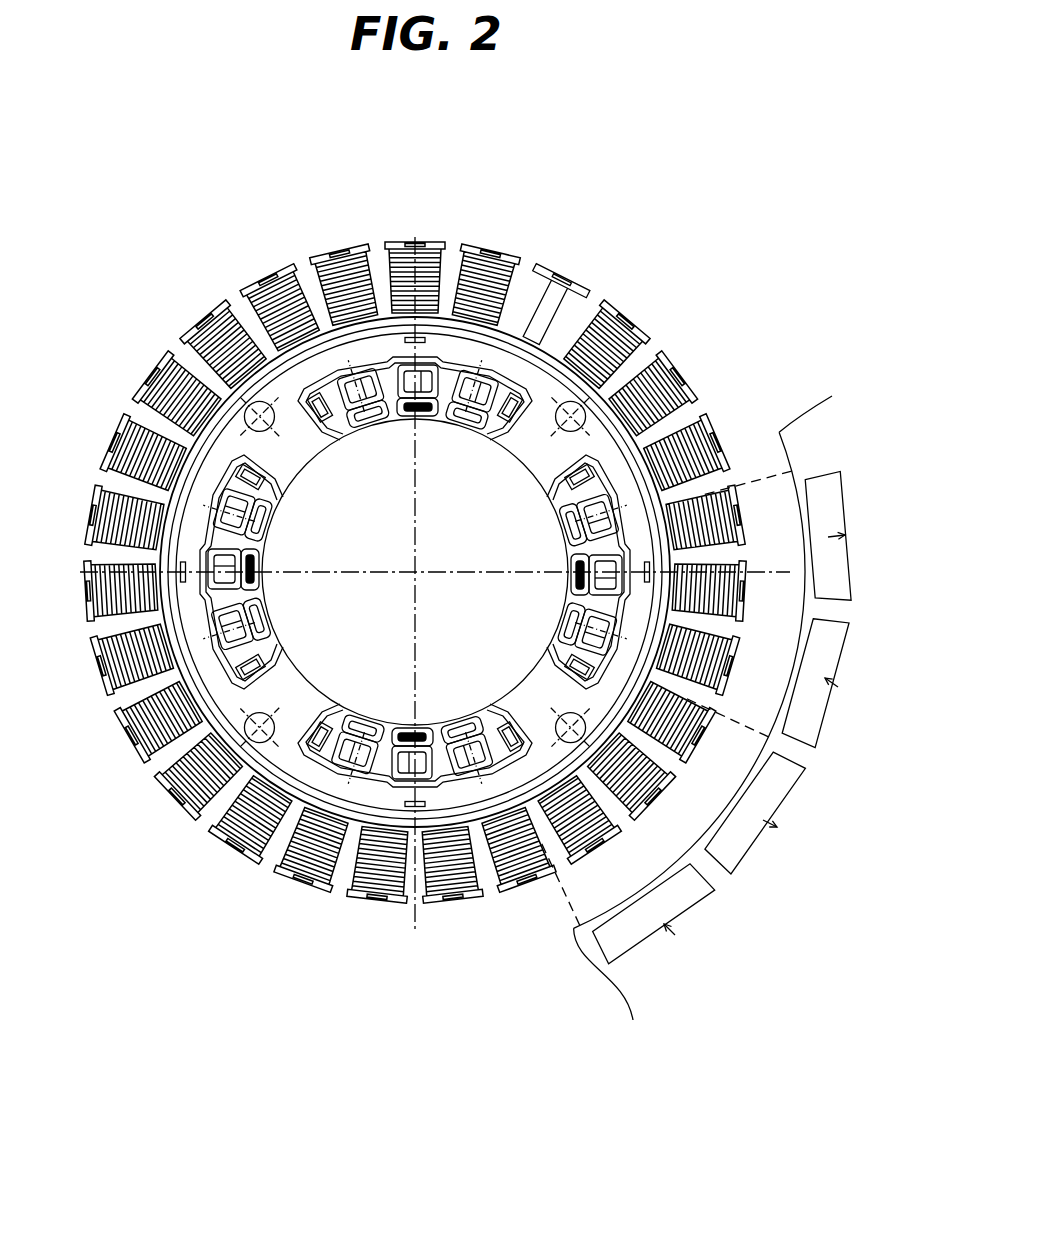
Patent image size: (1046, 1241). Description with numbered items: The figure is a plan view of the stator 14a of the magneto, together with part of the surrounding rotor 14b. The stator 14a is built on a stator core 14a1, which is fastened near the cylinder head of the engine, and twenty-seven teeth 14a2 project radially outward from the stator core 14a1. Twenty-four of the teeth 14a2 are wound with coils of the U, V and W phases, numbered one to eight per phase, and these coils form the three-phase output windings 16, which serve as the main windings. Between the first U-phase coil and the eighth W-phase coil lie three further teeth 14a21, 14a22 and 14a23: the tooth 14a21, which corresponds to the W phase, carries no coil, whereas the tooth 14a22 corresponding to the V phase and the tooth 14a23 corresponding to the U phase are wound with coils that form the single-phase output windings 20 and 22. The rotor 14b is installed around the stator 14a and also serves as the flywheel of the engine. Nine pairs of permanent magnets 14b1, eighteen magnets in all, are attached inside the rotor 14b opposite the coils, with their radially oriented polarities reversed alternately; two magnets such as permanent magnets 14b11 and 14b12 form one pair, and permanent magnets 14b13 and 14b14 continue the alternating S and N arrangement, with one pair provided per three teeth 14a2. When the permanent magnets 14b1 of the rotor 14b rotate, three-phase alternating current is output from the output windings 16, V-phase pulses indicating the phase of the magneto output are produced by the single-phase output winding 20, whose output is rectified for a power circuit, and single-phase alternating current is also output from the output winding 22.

The stator 14a is at (545, 202).
The stator core 14a1 is at (292, 455).
The teeth 14a2 is at (476, 246).
The three-phase output windings 16 is at (162, 352).
The tooth 14a21 is at (557, 274).
The tooth 14a22 is at (664, 337).
The single-phase output winding 20 is at (625, 320).
The tooth 14a23 is at (702, 388).
The single-phase output winding 22 is at (666, 366).
The rotor 14b is at (652, 1013).
The permanent magnets 14b1 is at (612, 970).
The permanent magnet 14b11 is at (634, 964).
The permanent magnet 14b12 is at (746, 868).
The permanent magnet 14b13 is at (806, 752).
The permanent magnet 14b14 is at (810, 478).